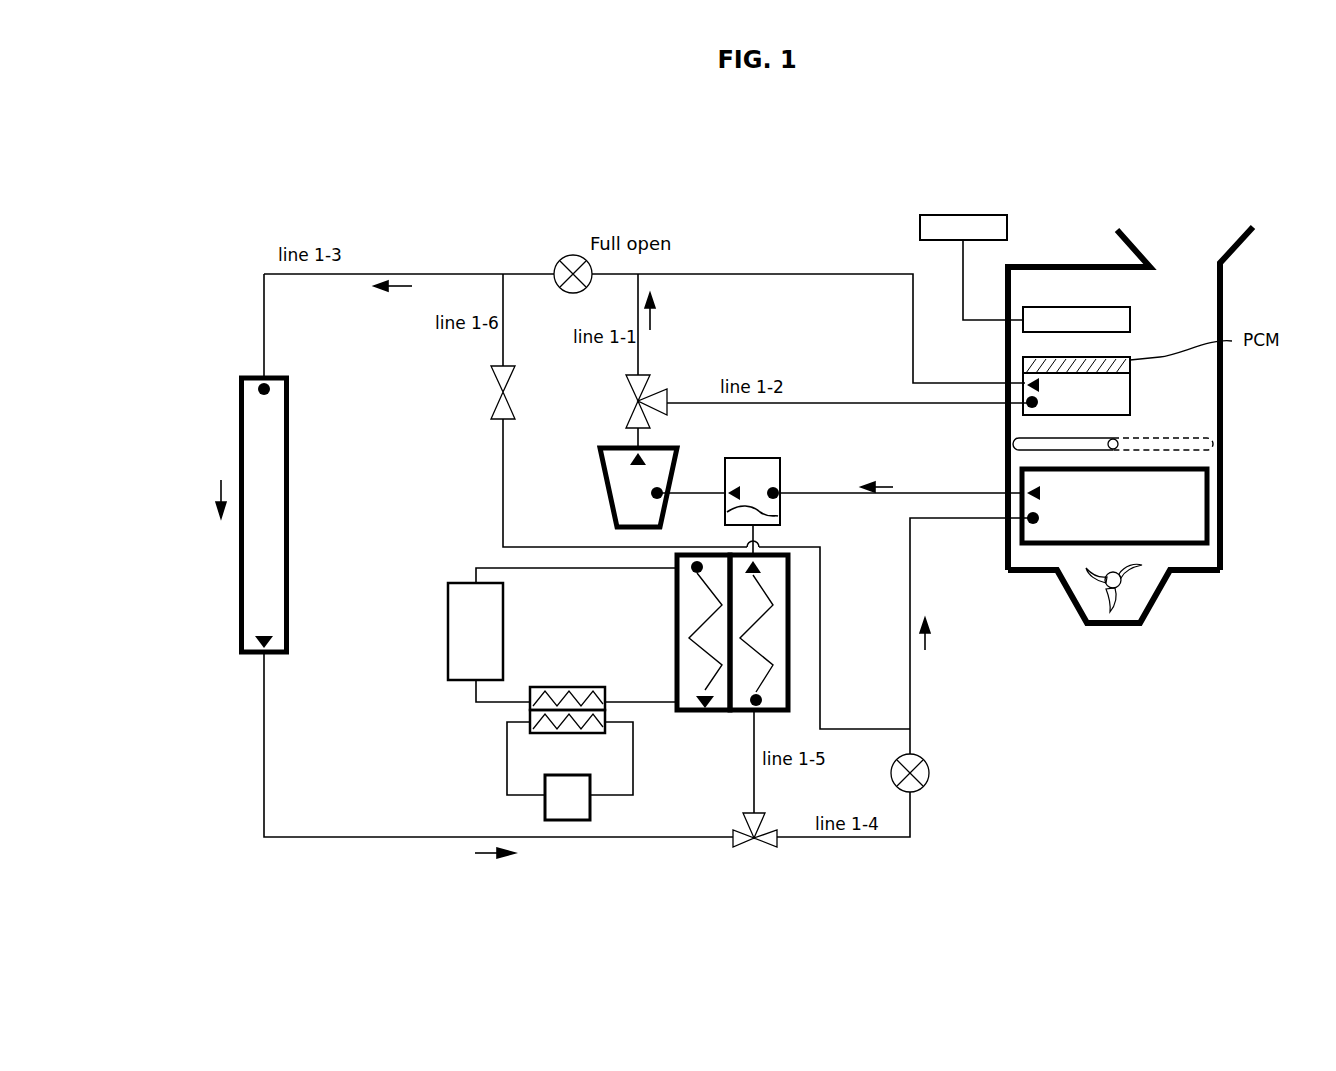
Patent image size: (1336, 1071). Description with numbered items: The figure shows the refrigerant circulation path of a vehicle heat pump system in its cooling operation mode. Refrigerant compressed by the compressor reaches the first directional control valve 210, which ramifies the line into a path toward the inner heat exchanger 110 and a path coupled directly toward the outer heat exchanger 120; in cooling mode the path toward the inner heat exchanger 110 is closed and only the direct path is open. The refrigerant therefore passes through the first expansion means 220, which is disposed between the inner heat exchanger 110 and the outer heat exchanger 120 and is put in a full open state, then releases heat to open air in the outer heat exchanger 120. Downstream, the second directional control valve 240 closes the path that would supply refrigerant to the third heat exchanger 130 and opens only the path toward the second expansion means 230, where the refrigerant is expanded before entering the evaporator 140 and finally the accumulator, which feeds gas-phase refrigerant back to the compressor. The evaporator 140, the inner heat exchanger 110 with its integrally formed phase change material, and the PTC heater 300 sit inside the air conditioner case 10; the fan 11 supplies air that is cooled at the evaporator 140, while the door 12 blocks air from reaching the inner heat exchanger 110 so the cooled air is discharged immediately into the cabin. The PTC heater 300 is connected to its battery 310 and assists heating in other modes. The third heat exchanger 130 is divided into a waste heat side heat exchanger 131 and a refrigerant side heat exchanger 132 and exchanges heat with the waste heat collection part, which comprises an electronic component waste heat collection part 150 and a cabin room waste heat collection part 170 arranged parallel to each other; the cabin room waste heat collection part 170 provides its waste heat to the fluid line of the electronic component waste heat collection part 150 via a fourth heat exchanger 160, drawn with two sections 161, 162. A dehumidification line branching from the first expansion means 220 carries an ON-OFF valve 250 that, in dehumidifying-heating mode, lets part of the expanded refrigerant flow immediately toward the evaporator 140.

The air conditioner case 10 is at (1225, 297).
The fan 11 is at (1120, 595).
The door 12 is at (1213, 447).
The inner heat exchanger 110 is at (1130, 390).
The outer heat exchanger 120 is at (241, 558).
The third heat exchanger 130 is at (697, 742).
The waste heat side heat exchanger 131 is at (705, 712).
The refrigerant side heat exchanger 132 is at (747, 712).
The evaporator 140 is at (1207, 497).
The electronic component waste heat collection part 150 is at (448, 627).
The fourth heat exchanger 160 is at (476, 732).
The first chiller part 161 is at (530, 703).
The second chiller part 162 is at (530, 728).
The cabin room waste heat collection part 170 is at (561, 820).
The first directional control valve 210 is at (628, 391).
The first expansion means 220 is at (570, 250).
The second expansion means 230 is at (925, 778).
The second directional control valve 240 is at (768, 847).
The ON-OFF valve 250 is at (491, 376).
The PTC heater 300 is at (1080, 305).
The battery 310 is at (950, 212).